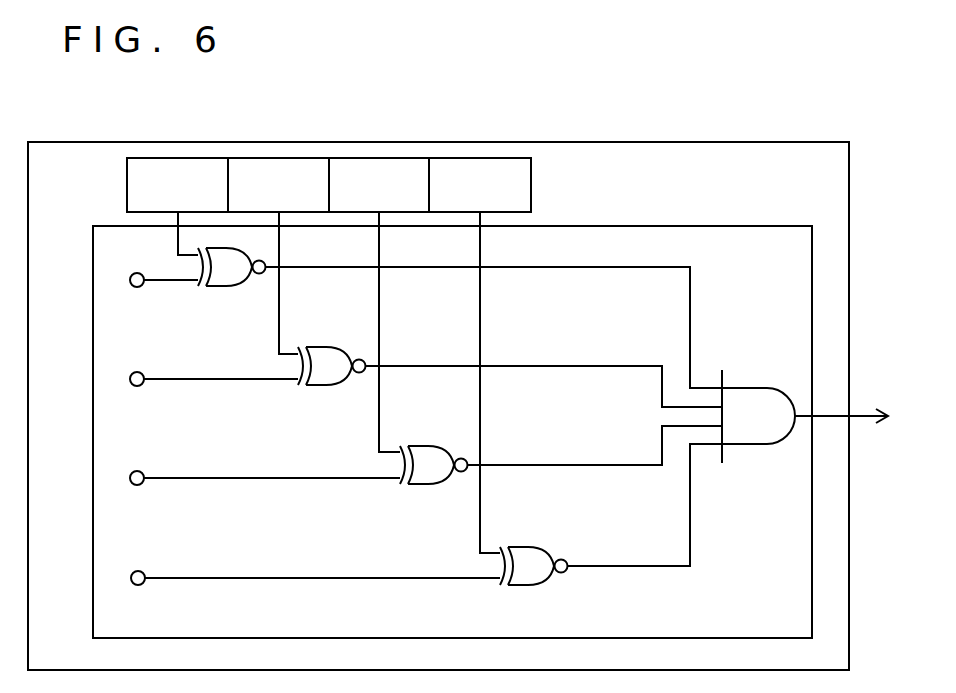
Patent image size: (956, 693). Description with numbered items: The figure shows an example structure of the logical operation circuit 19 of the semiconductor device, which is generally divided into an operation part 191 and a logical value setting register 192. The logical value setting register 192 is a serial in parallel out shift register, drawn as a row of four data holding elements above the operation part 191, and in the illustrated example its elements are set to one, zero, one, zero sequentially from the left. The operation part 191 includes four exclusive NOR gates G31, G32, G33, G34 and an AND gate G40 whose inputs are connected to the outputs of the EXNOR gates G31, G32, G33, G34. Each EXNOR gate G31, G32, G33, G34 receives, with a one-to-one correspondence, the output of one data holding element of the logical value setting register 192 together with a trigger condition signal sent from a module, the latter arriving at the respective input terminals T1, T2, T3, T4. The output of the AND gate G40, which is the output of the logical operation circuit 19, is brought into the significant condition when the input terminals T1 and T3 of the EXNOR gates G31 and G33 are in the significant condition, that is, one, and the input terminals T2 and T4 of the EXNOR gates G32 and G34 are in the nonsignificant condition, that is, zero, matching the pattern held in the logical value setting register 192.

The logical operation circuit 19 is at (750, 142).
The operation part 191 is at (757, 212).
The logical value setting register 192 is at (532, 187).
The EXNOR gate G31 is at (218, 281).
The EXNOR gate G32 is at (318, 378).
The EXNOR gate G33 is at (420, 478).
The EXNOR gate G34 is at (522, 577).
The AND gate G40 is at (747, 397).
The input terminal T1 is at (157, 265).
The input terminal T2 is at (207, 367).
The input terminal T3 is at (258, 466).
The input terminal T4 is at (308, 566).